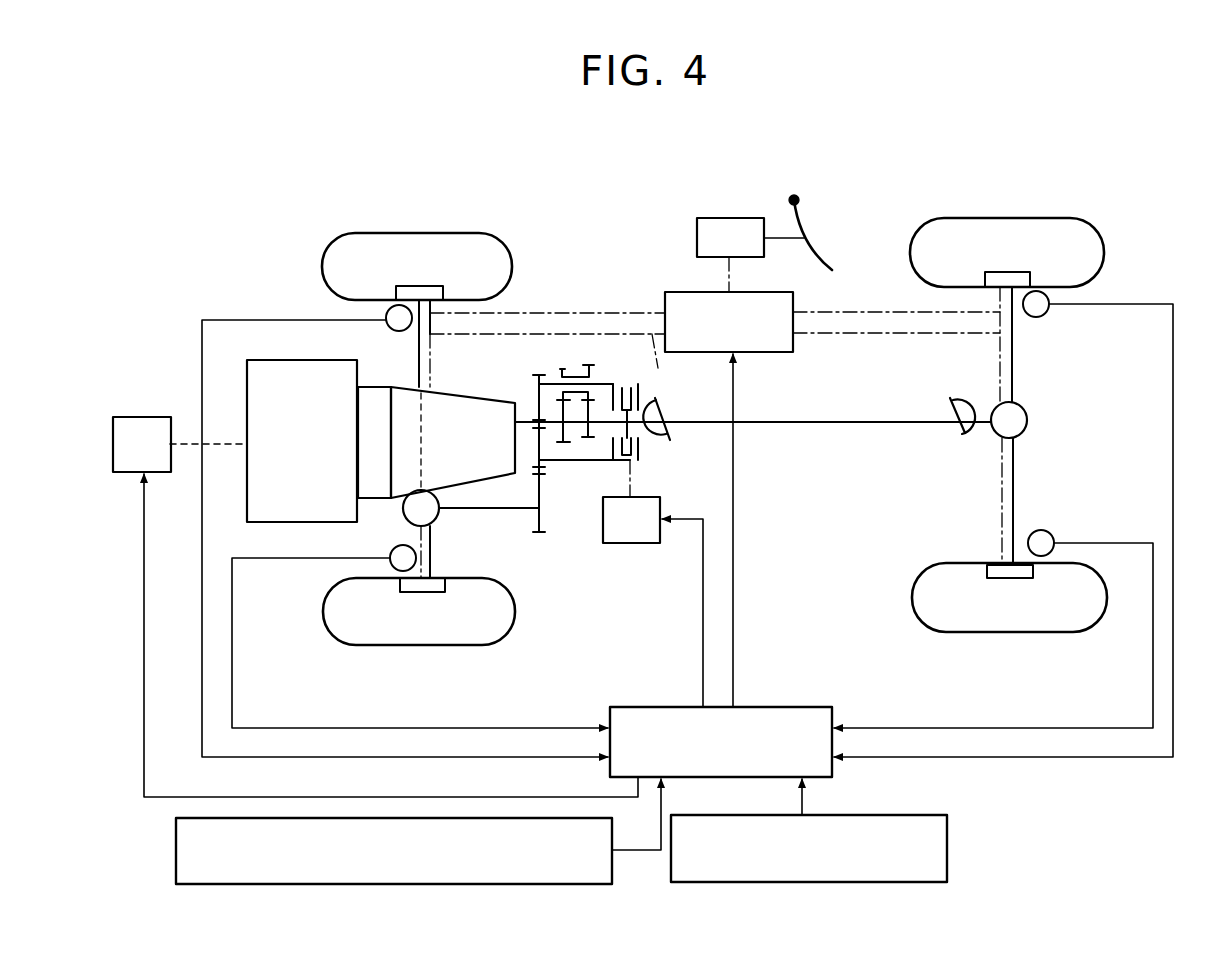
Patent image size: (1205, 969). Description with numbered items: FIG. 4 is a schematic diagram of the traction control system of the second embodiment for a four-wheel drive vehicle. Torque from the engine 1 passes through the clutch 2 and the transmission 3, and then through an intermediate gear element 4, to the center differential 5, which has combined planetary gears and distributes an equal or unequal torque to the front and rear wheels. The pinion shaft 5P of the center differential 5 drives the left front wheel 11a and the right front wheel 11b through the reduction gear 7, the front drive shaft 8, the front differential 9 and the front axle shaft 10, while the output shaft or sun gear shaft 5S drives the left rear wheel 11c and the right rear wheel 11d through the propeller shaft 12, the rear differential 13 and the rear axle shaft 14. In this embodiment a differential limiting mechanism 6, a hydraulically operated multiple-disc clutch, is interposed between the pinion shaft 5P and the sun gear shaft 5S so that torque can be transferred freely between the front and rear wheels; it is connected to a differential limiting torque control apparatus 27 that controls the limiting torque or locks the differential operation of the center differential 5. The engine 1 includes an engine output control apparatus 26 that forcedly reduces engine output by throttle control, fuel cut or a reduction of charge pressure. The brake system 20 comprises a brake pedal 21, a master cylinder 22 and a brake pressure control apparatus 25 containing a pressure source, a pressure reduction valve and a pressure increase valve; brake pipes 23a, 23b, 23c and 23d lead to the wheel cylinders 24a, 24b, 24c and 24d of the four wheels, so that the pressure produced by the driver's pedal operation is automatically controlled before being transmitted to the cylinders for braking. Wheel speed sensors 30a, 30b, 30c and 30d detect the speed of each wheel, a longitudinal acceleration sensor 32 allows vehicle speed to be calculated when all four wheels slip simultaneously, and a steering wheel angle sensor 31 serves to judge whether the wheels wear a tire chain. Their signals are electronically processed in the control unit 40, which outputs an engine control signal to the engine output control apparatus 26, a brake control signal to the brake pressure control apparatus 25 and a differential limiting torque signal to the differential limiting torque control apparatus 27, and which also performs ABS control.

The engine 1 is at (248, 378).
The clutch 2 is at (372, 389).
The transmission 3 is at (451, 393).
The transmission output gear 4 is at (528, 422).
The center differential 5 is at (578, 375).
The pinion shaft 5P is at (606, 388).
The sun gear shaft 5S is at (606, 430).
The differential limiting mechanism 6 is at (640, 450).
The reduction gear 7 is at (543, 524).
The front drive shaft 8 is at (511, 512).
The front differential 9 is at (403, 512).
The front axle shaft 10 is at (432, 557).
The left front wheel 11a is at (464, 646).
The right front wheel 11b is at (440, 233).
The left rear wheel 11c is at (1054, 632).
The right rear wheel 11d is at (1030, 218).
The propeller shaft 12 is at (906, 424).
The rear differential 13 is at (1026, 412).
The rear axle shaft 14 is at (1016, 462).
The brake system 20 is at (688, 178).
The brake pedal 21 is at (823, 264).
The master cylinder 22 is at (696, 238).
The brake pipe 23a is at (679, 366).
The brake pipe 23b is at (551, 312).
The brake pipe 23c is at (868, 335).
The brake pipe 23d is at (837, 312).
The wheel cylinder 24a is at (430, 592).
The wheel cylinder 24b is at (419, 286).
The wheel cylinder 24c is at (1022, 578).
The wheel cylinder 24d is at (1004, 272).
The brake pressure control apparatus 25 is at (778, 352).
The engine output control apparatus 26 is at (145, 417).
The differential limiting torque control apparatus 27 is at (641, 543).
The wheel speed sensor 30a is at (390, 555).
The wheel speed sensor 30b is at (386, 328).
The wheel speed sensor 30c is at (1050, 536).
The wheel speed sensor 30d is at (1048, 312).
The steering wheel angle sensor 31 is at (948, 847).
The longitudinal acceleration sensor 32 is at (176, 845).
The control unit 40 is at (797, 707).